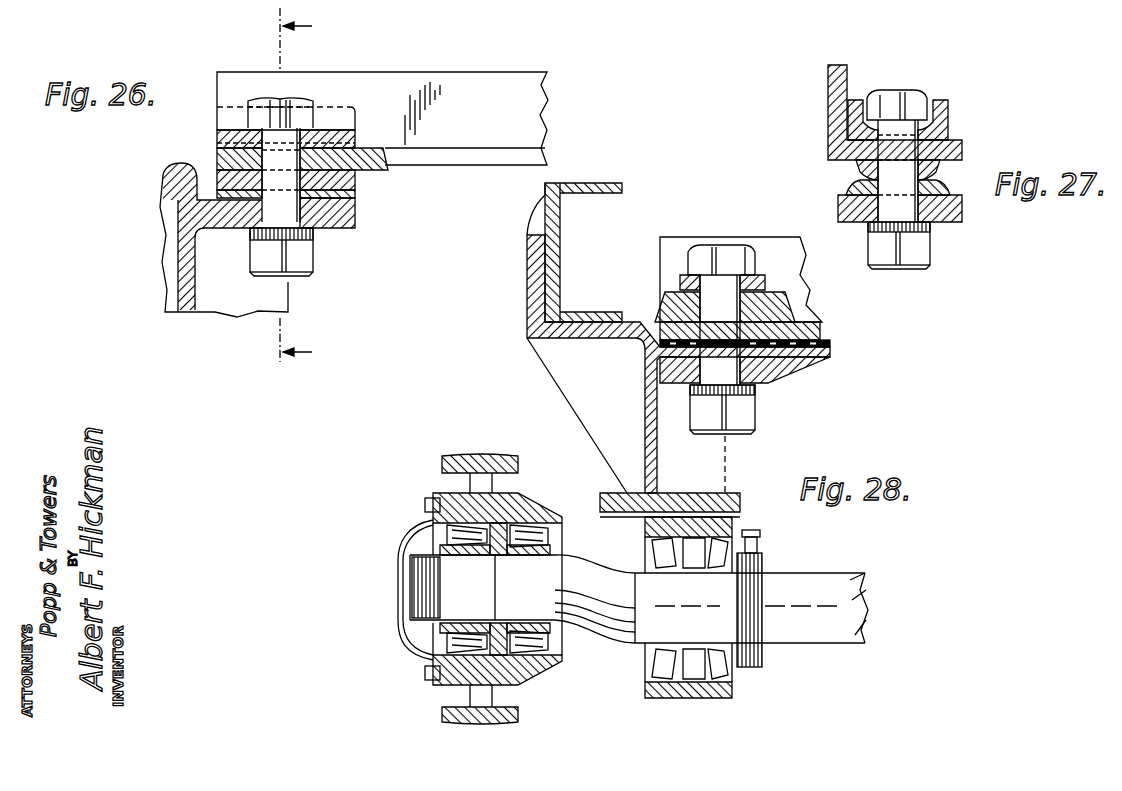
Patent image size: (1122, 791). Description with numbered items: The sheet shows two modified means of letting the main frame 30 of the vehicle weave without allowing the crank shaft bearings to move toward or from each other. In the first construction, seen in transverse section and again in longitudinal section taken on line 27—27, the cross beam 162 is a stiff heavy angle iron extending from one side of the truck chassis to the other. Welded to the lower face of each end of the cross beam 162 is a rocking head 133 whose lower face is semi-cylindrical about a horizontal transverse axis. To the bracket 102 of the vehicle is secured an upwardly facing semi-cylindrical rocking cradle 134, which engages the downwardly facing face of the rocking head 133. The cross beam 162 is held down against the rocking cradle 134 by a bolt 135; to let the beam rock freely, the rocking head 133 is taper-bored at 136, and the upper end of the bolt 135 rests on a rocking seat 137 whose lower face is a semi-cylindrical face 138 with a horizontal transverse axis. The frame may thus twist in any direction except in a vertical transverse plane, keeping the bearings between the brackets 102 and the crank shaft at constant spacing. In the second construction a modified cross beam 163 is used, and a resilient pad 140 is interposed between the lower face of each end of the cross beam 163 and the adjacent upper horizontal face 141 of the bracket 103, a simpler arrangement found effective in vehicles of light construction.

In FIG. 26, the section line 27 is at (290, 194).
In FIG. 28, the frame channel member 30 is at (596, 192).
In FIG. 26, the bracket 102 is at (165, 205).
In FIG. 28, the bracket 103 is at (648, 368).
In FIG. 26, the rocking head 133 is at (355, 184).
In FIG. 27, the rocking head 133 is at (858, 168).
In FIG. 26, the rocking cradle 134 is at (355, 198).
In FIG. 27, the rocking cradle 134 is at (858, 182).
In FIG. 26, the bolt 135 is at (303, 105).
In FIG. 27, the bolt 135 is at (912, 70).
In FIG. 26, the taper bore 136 is at (262, 224).
In FIG. 27, the taper bore 136 is at (962, 205).
In FIG. 26, the rocking seat 137 is at (340, 117).
In FIG. 27, the rocking seat 137 is at (945, 120).
In FIG. 26, the semi-cylindrical face 138 is at (337, 140).
In FIG. 27, the semi-cylindrical face 138 is at (848, 133).
In FIG. 28, the resilient pad 140 is at (800, 345).
In FIG. 28, the upper horizontal face 141 is at (788, 368).
In FIG. 26, the cross beam 162 is at (500, 60).
In FIG. 27, the cross beam 162 is at (828, 88).
In FIG. 28, the cross beam 163 is at (805, 265).